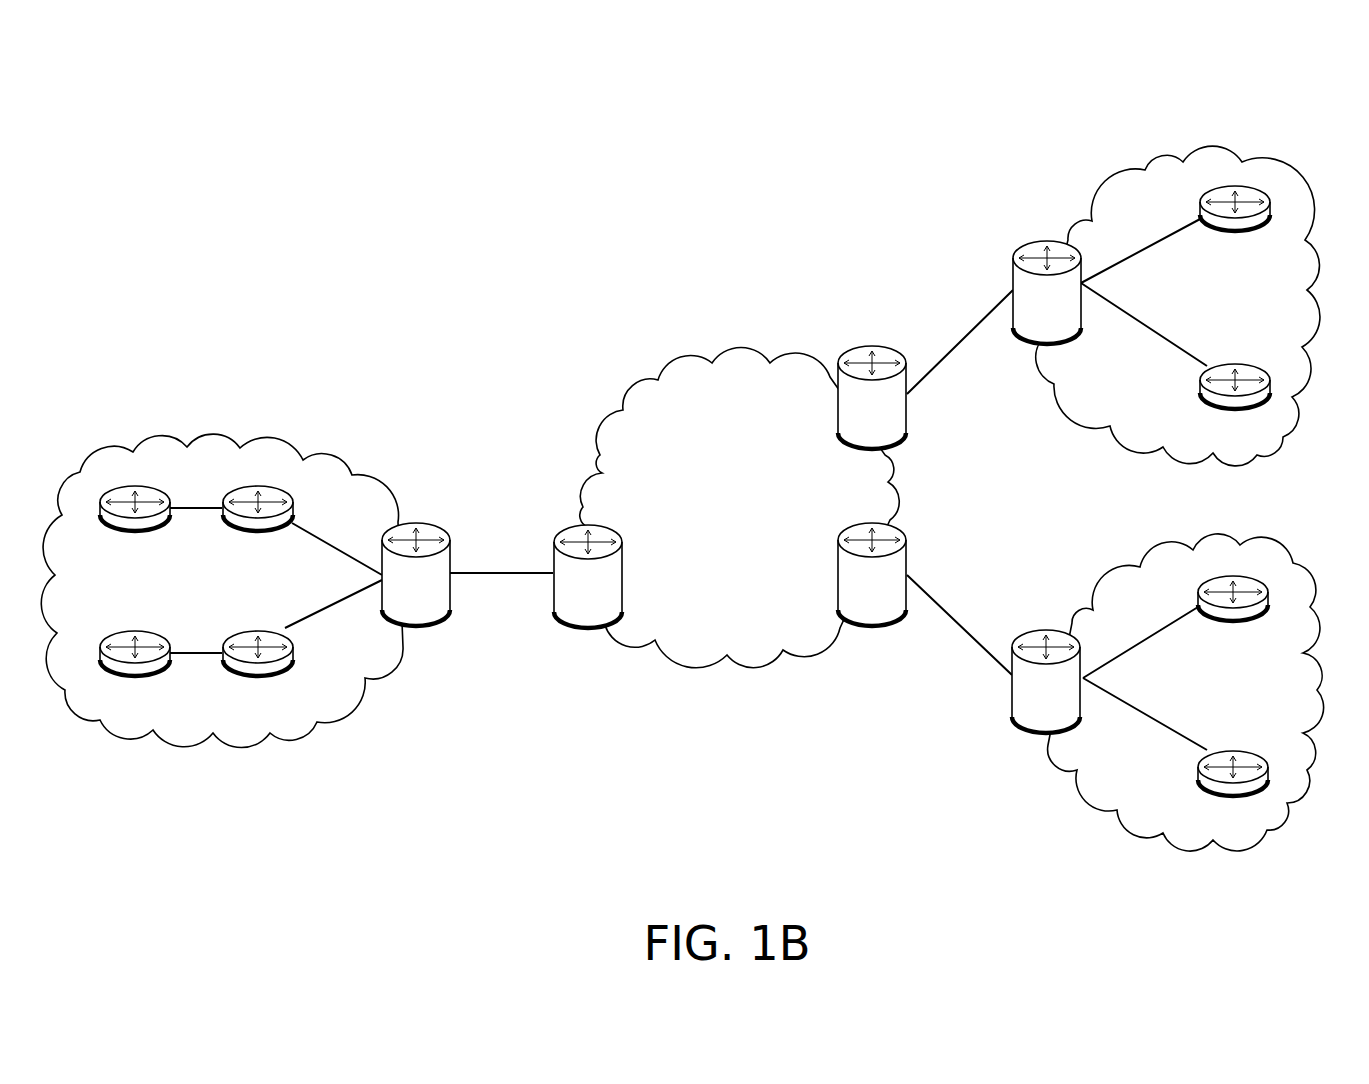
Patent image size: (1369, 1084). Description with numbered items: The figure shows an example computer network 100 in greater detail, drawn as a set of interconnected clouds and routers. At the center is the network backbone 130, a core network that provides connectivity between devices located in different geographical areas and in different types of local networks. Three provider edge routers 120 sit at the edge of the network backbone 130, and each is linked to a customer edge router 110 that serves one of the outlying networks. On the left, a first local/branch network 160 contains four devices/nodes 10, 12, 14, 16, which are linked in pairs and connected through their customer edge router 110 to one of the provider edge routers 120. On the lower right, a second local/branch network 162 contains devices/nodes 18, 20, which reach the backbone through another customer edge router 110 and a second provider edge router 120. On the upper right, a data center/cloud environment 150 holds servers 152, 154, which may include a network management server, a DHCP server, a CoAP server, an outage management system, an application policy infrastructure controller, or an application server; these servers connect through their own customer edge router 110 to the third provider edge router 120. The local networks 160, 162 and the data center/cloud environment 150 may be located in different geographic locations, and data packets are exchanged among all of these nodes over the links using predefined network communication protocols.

The device/node 10 is at (135, 524).
The device/node 12 is at (258, 524).
The device/node 14 is at (135, 668).
The device/node 16 is at (258, 668).
The device/node 18 is at (1233, 789).
The device/node 20 is at (1233, 613).
The computer network 100 is at (1285, 89).
The customer edge (CE) router 110 is at (731, 487).
The provider edge (PE) router 120 is at (730, 487).
The network backbone 130 is at (717, 531).
The data center/cloud environment 150 is at (1147, 160).
The server 152 is at (1235, 224).
The server 154 is at (1235, 402).
The local/branch network 160 is at (284, 430).
The local/branch network 162 is at (1062, 788).